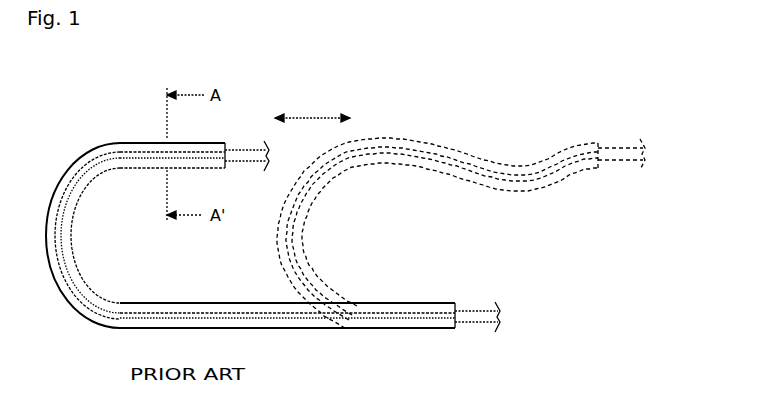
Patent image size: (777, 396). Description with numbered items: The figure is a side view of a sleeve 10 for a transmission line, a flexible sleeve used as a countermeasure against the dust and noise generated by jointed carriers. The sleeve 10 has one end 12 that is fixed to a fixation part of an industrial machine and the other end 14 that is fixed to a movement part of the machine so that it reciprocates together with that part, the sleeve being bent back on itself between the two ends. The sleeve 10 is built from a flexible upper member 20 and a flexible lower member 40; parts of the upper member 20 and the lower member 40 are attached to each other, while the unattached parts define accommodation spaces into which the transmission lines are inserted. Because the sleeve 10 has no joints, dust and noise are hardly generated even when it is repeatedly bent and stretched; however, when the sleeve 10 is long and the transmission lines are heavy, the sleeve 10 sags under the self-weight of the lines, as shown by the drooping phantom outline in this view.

The sleeve for transmission line 10 is at (61, 70).
The one end 12 is at (460, 330).
The other end 14 is at (233, 147).
The flexible upper member 20 is at (109, 140).
The flexible lower member 40 is at (107, 172).